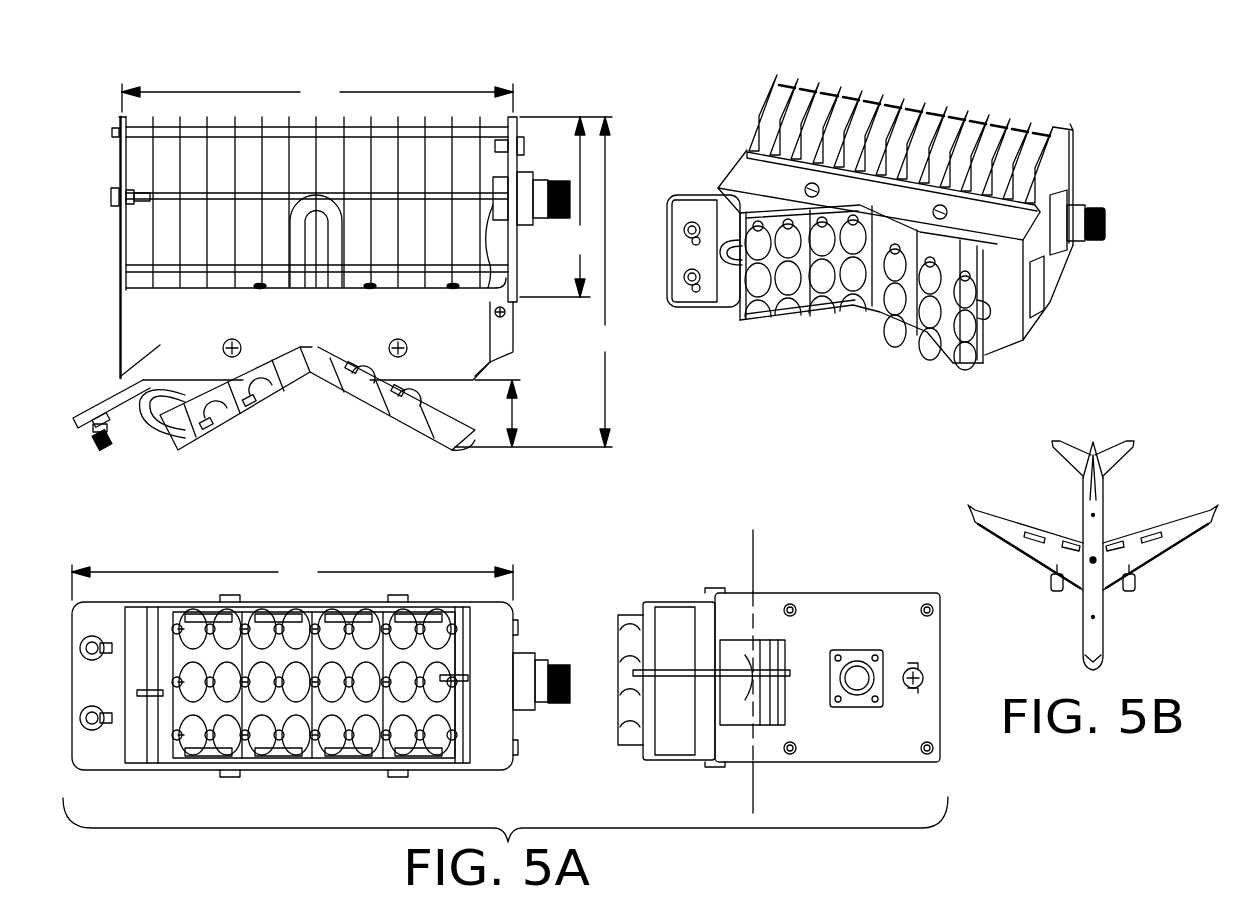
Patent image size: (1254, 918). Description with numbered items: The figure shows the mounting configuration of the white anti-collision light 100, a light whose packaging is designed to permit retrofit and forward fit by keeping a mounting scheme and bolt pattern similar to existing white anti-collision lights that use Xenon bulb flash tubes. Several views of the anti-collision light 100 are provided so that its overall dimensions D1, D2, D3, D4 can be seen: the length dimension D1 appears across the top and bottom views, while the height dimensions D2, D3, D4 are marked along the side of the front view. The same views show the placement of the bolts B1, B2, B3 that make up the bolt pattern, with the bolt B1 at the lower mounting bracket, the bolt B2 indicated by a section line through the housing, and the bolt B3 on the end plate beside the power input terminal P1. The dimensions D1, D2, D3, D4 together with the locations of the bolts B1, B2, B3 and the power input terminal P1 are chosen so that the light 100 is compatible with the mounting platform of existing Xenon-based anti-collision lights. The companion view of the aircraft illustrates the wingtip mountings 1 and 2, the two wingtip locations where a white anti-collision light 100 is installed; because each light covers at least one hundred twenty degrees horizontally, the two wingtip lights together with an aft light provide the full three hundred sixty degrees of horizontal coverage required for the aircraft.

In FIG. 5A, the white anti-collision light 100 is at (187, 73).
In FIG. 5A, the dimension D1 is at (292, 338).
In FIG. 5A, the dimension D2 is at (540, 282).
In FIG. 5A, the dimension D3 is at (515, 415).
In FIG. 5A, the dimension D4 is at (557, 207).
In FIG. 5A, the bolt B1 is at (105, 448).
In FIG. 5A, the bolt B2 is at (745, 553).
In FIG. 5A, the bolt B3 is at (905, 690).
In FIG. 5A, the power input terminal P1 is at (870, 650).
In FIG. 5B, the wingtip mounting 1 is at (978, 525).
In FIG. 5B, the wingtip mounting 2 is at (1208, 525).